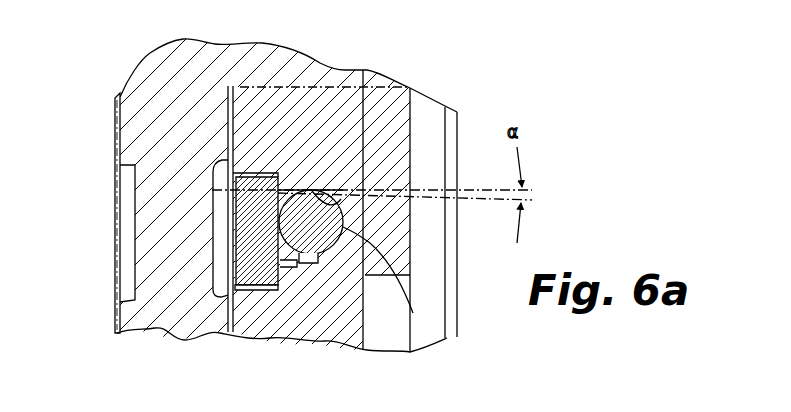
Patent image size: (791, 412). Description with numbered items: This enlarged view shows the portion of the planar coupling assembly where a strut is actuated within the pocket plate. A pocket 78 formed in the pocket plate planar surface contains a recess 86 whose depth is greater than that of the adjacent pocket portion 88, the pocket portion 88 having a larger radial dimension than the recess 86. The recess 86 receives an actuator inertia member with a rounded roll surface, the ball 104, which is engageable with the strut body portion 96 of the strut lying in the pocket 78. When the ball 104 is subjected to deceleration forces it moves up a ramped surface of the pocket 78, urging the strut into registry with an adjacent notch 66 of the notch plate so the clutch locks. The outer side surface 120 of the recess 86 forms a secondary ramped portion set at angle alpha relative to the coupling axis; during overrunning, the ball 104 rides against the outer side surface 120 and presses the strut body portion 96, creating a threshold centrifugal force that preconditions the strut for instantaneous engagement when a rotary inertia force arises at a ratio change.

The notch 66 is at (212, 190).
The pocket 78 is at (258, 300).
The recess 86 is at (296, 268).
The pocket portion 88 is at (276, 173).
The strut body portion 96 is at (252, 232).
The ball 104 is at (413, 313).
The outer side surface 120 is at (345, 190).